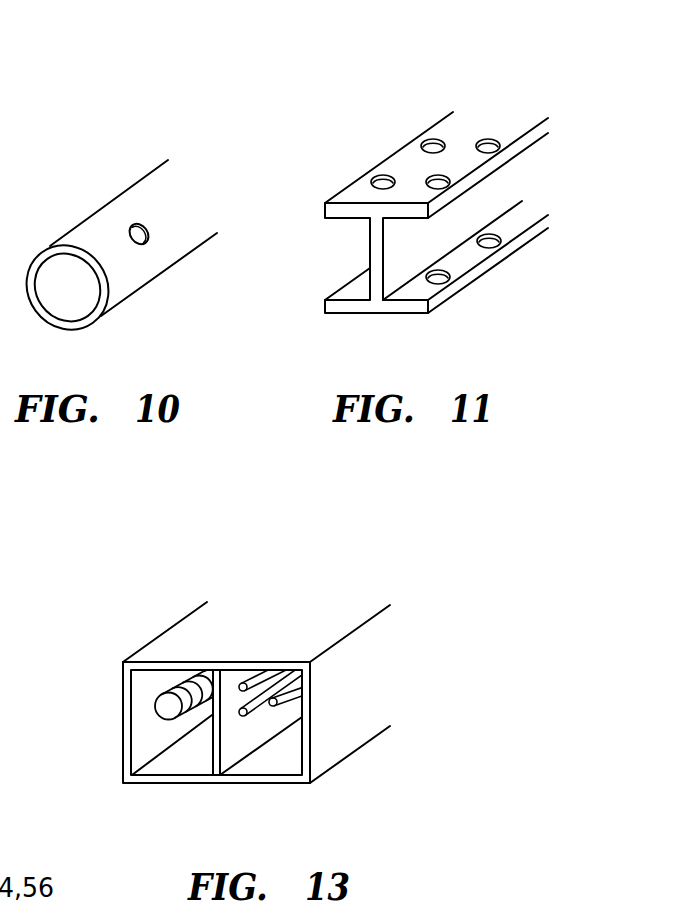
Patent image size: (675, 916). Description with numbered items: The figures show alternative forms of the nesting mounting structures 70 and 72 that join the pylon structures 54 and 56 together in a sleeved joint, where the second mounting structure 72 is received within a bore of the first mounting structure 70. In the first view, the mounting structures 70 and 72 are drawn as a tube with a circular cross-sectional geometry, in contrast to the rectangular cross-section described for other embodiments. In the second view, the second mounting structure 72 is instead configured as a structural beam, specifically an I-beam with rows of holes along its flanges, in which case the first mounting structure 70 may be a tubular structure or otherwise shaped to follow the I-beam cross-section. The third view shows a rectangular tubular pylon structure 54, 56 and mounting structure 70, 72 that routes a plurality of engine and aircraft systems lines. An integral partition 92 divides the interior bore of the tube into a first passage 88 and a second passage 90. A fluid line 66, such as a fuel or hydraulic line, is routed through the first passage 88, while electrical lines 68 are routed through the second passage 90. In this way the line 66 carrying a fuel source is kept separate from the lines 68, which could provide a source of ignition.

In FIG. 13, the first pylon structure 54 is at (303, 669).
In FIG. 13, the second pylon structure 56 is at (336, 599).
In FIG. 13, the fluid line 66 is at (163, 684).
In FIG. 13, the electrical lines 68 is at (294, 702).
In FIG. 10, the first mounting structure 70 is at (115, 187).
In FIG. 13, the first mounting structure 70 is at (240, 639).
In FIG. 10, the second mounting structure 72 is at (156, 128).
In FIG. 11, the second mounting structure 72 is at (494, 100).
In FIG. 13, the second mounting structure 72 is at (293, 598).
In FIG. 13, the first passage 88 is at (184, 762).
In FIG. 13, the second passage 90 is at (278, 762).
In FIG. 13, the integral partition 92 is at (222, 688).